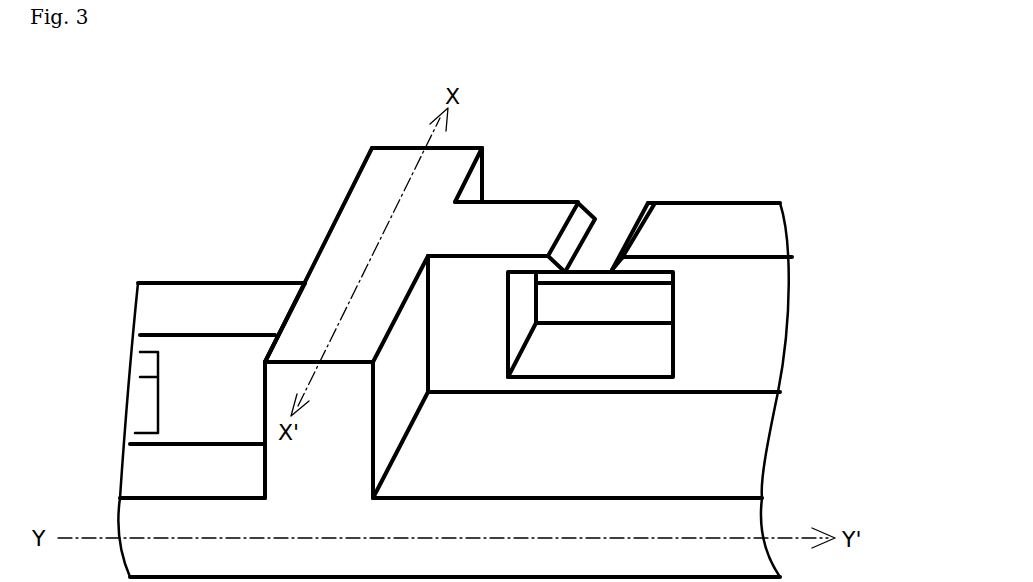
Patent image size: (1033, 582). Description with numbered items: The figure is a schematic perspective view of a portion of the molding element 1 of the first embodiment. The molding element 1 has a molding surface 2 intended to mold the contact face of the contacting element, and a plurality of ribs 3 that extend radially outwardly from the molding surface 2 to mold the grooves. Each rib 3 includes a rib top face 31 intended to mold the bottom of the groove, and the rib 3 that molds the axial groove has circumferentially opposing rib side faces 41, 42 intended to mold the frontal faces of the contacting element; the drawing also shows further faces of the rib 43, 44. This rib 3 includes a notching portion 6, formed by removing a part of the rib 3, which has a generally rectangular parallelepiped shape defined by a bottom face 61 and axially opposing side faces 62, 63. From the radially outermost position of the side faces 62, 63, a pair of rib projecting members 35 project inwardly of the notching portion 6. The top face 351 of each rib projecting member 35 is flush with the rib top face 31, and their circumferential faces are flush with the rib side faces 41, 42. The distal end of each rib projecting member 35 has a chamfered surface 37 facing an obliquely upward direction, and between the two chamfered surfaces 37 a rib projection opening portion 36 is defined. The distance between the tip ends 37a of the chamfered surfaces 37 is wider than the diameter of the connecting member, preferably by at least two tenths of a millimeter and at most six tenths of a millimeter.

The molding element 1 is at (197, 160).
The molding surface 2 is at (187, 483).
The rib 3 is at (388, 148).
The rib top face 31 is at (503, 245).
The rib projecting member 35 is at (147, 313).
The top face of the rib projecting member 351 is at (543, 202).
The rib projection opening portion 36 is at (643, 207).
The chamfered surface 37 is at (592, 207).
The tip end of the chamfered surface 37a is at (607, 207).
The rib side face 41 is at (233, 413).
The rib side face 42 is at (260, 282).
The side surface of insulating layer 43 is at (395, 400).
The inclined side surface 44 is at (345, 202).
The notching portion 6 is at (147, 397).
The bottom face 61 is at (143, 418).
The side face 62 is at (523, 325).
The side face 63 is at (665, 340).